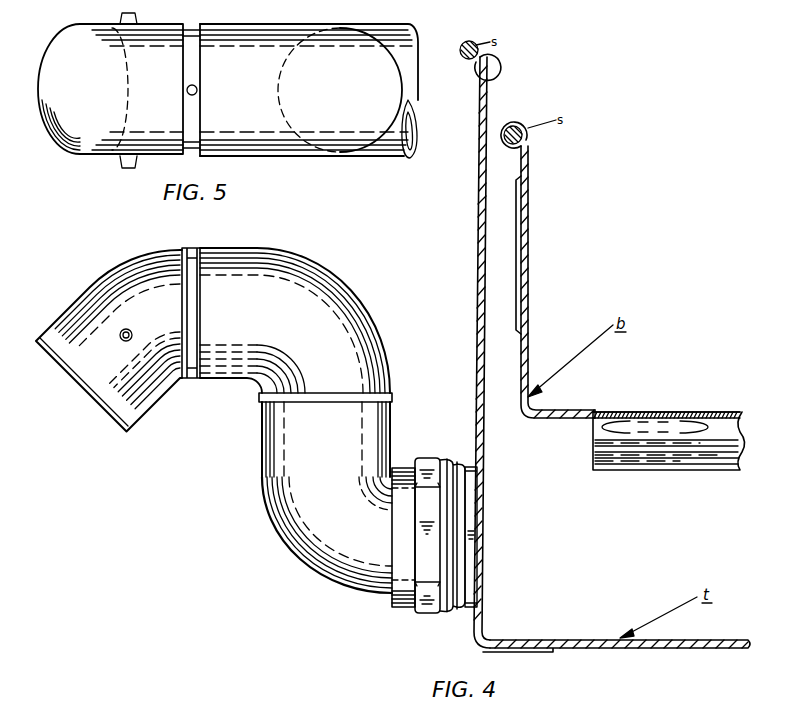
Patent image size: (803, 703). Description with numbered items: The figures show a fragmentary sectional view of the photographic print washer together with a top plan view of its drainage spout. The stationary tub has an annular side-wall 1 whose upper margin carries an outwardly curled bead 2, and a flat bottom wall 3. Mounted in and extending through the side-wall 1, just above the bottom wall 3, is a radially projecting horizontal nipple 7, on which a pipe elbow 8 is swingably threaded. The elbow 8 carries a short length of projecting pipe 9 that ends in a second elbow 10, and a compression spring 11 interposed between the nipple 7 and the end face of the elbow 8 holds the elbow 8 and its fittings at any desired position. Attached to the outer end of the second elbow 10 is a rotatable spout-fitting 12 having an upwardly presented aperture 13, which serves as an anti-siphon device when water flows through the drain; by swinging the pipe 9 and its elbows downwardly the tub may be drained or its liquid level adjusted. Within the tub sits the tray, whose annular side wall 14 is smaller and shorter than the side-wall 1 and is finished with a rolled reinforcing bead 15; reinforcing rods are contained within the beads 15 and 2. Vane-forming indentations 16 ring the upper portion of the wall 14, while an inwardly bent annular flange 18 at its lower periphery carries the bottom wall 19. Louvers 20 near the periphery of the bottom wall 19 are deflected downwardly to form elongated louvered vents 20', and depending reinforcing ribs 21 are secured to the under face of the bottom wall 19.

In FIG. 4, the annular side-wall 1 is at (478, 173).
In FIG. 4, the outwardly curled bead 2 is at (473, 35).
In FIG. 4, the flat bottom wall 3 is at (615, 645).
In FIG. 4, the nipple 7 is at (470, 468).
In FIG. 4, the pipe elbow 8 is at (340, 587).
In FIG. 4, the projecting pipe 9 is at (392, 397).
In FIG. 4, the second elbow 10 is at (370, 317).
In FIG. 4, the compression spring 11 is at (443, 611).
In FIG. 4, the rotatable spout-fitting 12 is at (107, 267).
In FIG. 5, the aperture 13 is at (198, 86).
In FIG. 4, the aperture 13 is at (190, 258).
In FIG. 4, the annular side wall 14 is at (528, 332).
In FIG. 4, the rolled reinforcing and finishing bead 15 is at (515, 125).
In FIG. 4, the vane-forming indentations 16 is at (518, 230).
In FIG. 4, the inwardly bent annular flange 18 is at (567, 418).
In FIG. 4, the bottom wall 19 is at (598, 410).
In FIG. 4, the louvers 20 is at (657, 436).
In FIG. 4, the louvered vents 20' is at (666, 392).
In FIG. 4, the reinforcing ribs 21 is at (643, 470).